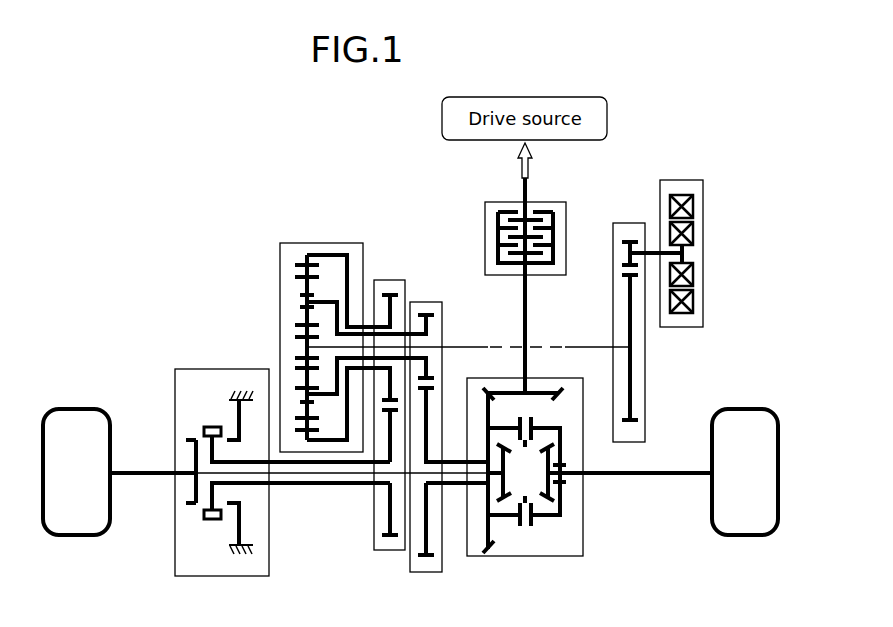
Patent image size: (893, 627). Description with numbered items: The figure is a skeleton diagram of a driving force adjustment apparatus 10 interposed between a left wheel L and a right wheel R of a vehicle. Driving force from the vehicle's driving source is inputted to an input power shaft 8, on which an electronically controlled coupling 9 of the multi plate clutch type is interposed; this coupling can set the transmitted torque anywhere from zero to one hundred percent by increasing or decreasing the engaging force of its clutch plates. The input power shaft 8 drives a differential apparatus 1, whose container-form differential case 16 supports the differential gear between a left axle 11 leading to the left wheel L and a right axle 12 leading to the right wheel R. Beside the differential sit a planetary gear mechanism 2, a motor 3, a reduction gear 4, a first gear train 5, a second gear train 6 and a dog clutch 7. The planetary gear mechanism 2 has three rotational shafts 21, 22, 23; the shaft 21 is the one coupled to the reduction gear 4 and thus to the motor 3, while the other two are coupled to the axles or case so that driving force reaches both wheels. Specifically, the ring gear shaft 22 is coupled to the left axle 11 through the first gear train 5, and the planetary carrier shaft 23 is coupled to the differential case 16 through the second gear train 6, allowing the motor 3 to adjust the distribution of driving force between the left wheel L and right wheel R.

The differential apparatus 1 is at (543, 489).
The planetary gear mechanism 2 is at (305, 243).
The motor 3 is at (681, 180).
The reduction gear 4 is at (629, 223).
The first gear train 5 is at (383, 280).
The second gear train 6 is at (425, 302).
The dog clutch 7 is at (215, 369).
The input power shaft 8 is at (528, 306).
The electronically controlled coupling 9 is at (556, 202).
The driving force adjustment apparatus 10 is at (138, 184).
The left axle 11 is at (138, 470).
The right axle 12 is at (675, 471).
The differential case 16 is at (503, 517).
The rotational shaft 21 is at (466, 346).
The ring gear shaft 22 is at (356, 326).
The planetary carrier shaft 23 is at (399, 333).
The left wheel L is at (76, 409).
The right wheel R is at (746, 409).